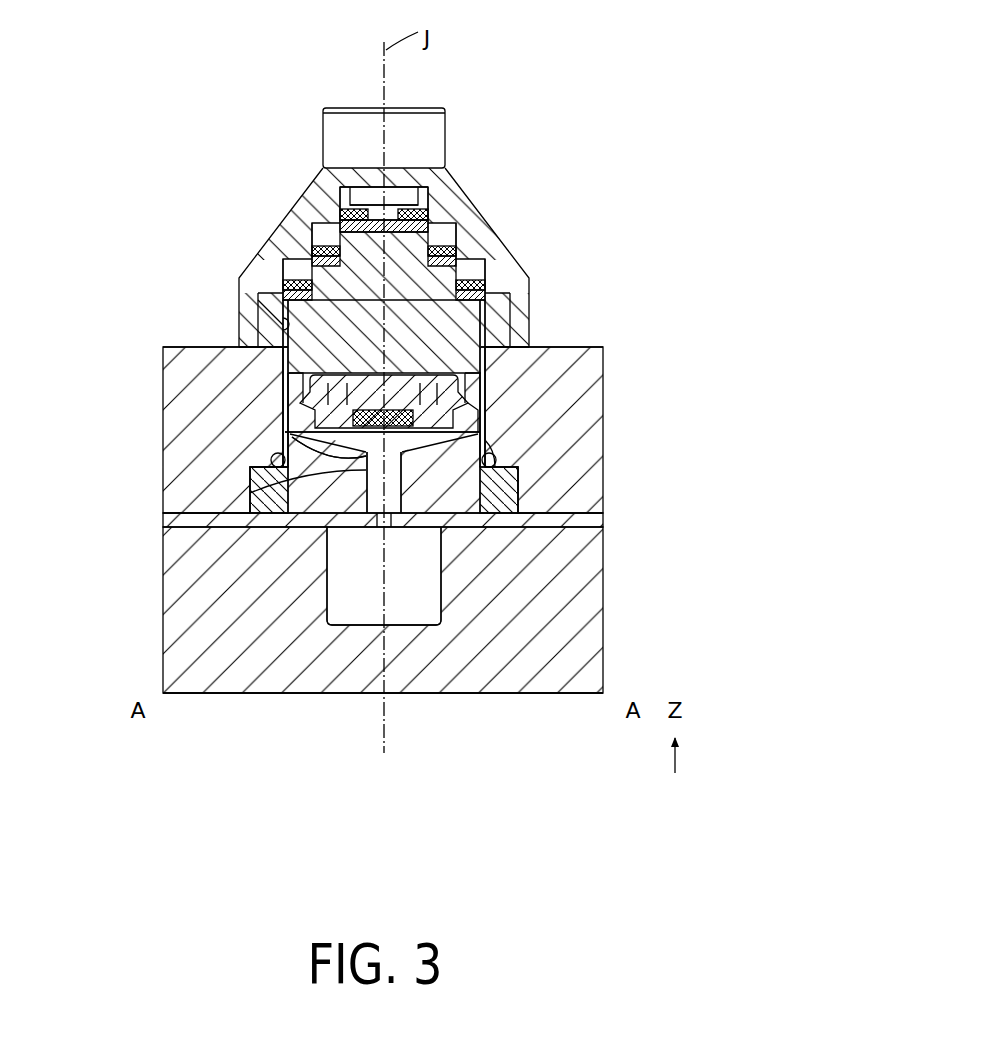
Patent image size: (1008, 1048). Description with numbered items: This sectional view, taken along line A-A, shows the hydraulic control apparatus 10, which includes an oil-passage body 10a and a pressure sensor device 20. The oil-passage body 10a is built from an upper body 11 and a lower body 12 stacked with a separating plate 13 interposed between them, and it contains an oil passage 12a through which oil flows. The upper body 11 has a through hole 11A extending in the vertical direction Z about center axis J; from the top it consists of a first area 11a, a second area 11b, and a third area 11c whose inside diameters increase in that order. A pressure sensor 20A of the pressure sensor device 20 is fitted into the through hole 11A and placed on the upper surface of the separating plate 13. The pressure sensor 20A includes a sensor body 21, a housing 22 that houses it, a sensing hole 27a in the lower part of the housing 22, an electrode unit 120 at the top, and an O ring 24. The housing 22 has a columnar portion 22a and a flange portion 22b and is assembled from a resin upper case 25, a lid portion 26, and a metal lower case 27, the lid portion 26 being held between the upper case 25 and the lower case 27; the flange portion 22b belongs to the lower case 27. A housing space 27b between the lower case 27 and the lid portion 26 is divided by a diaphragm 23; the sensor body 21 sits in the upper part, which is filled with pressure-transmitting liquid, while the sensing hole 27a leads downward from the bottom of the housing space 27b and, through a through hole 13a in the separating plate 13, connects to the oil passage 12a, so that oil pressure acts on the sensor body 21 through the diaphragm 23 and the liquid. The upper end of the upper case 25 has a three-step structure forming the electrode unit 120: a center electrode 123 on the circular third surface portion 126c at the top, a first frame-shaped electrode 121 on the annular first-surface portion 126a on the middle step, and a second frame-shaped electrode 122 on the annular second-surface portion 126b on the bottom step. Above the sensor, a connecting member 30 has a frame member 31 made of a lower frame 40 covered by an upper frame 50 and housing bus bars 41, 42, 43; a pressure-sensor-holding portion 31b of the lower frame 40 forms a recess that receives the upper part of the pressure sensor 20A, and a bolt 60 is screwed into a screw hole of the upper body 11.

The hydraulic control apparatus 10 is at (603, 92).
The oil-passage body 10a is at (700, 495).
The upper body 11 is at (594, 490).
The through hole 11A is at (700, 363).
The first area 11a is at (468, 382).
The second area 11b is at (496, 463).
The third area 11c is at (518, 482).
The lower body 12 is at (594, 587).
The oil passage 12a is at (345, 614).
The separating plate 13 is at (594, 522).
The through hole 13a is at (380, 530).
The pressure sensor device 20 is at (483, 140).
The pressure sensor 20A is at (492, 352).
The sensor body 21 is at (476, 400).
The housing 22 is at (106, 362).
The columnar portion 22a is at (281, 358).
The flange portion 22b is at (248, 483).
The diaphragm 23 is at (315, 452).
The O ring 24 is at (262, 480).
The upper case 25 is at (312, 383).
The lid portion 26 is at (365, 418).
The lower case 27 is at (271, 459).
The sensing hole 27a is at (392, 470).
The housing space 27b is at (330, 518).
The connecting member 30 is at (532, 330).
The frame member 31 is at (611, 177).
The pressure-sensor-holding portion 31b is at (262, 328).
The lower frame 40 is at (488, 302).
The bus bar 41 is at (312, 222).
The bus bar 42 is at (285, 263).
The bus bar 43 is at (347, 200).
The upper frame 50 is at (450, 186).
The bolt 60 is at (330, 114).
The electrode unit 120 is at (414, 194).
The first frame-shaped electrode 121 is at (444, 250).
The second frame-shaped electrode 122 is at (466, 290).
The center electrode 123 is at (426, 224).
The annular first-surface portion 126a is at (312, 250).
The annular second-surface portion 126b is at (285, 288).
The third surface portion 126c is at (341, 212).